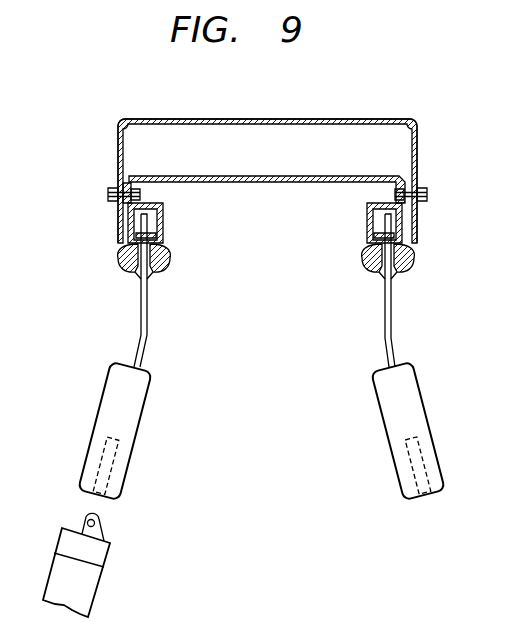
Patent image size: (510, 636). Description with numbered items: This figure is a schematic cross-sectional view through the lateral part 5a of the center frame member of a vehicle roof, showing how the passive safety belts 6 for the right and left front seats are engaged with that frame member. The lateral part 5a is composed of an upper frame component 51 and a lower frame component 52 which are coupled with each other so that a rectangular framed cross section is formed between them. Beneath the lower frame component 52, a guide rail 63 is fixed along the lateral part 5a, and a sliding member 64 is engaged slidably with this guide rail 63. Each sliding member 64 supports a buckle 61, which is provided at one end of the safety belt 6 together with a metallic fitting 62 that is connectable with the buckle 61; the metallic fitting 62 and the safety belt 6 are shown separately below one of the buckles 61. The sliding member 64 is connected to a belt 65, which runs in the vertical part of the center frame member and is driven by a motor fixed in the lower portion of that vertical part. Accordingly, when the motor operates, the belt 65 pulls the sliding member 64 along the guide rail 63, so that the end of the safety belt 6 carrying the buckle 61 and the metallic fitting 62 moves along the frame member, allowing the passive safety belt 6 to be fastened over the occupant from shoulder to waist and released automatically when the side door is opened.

The lateral part 5a is at (333, 121).
The upper frame component 51 is at (197, 121).
The lower frame component 52 is at (325, 183).
The guide rail 63 is at (165, 206).
The sliding member 64 is at (163, 237).
The belt 65 is at (122, 258).
The buckle 61 is at (148, 406).
The metallic fitting 62 is at (109, 541).
The safety belt 6 is at (102, 584).